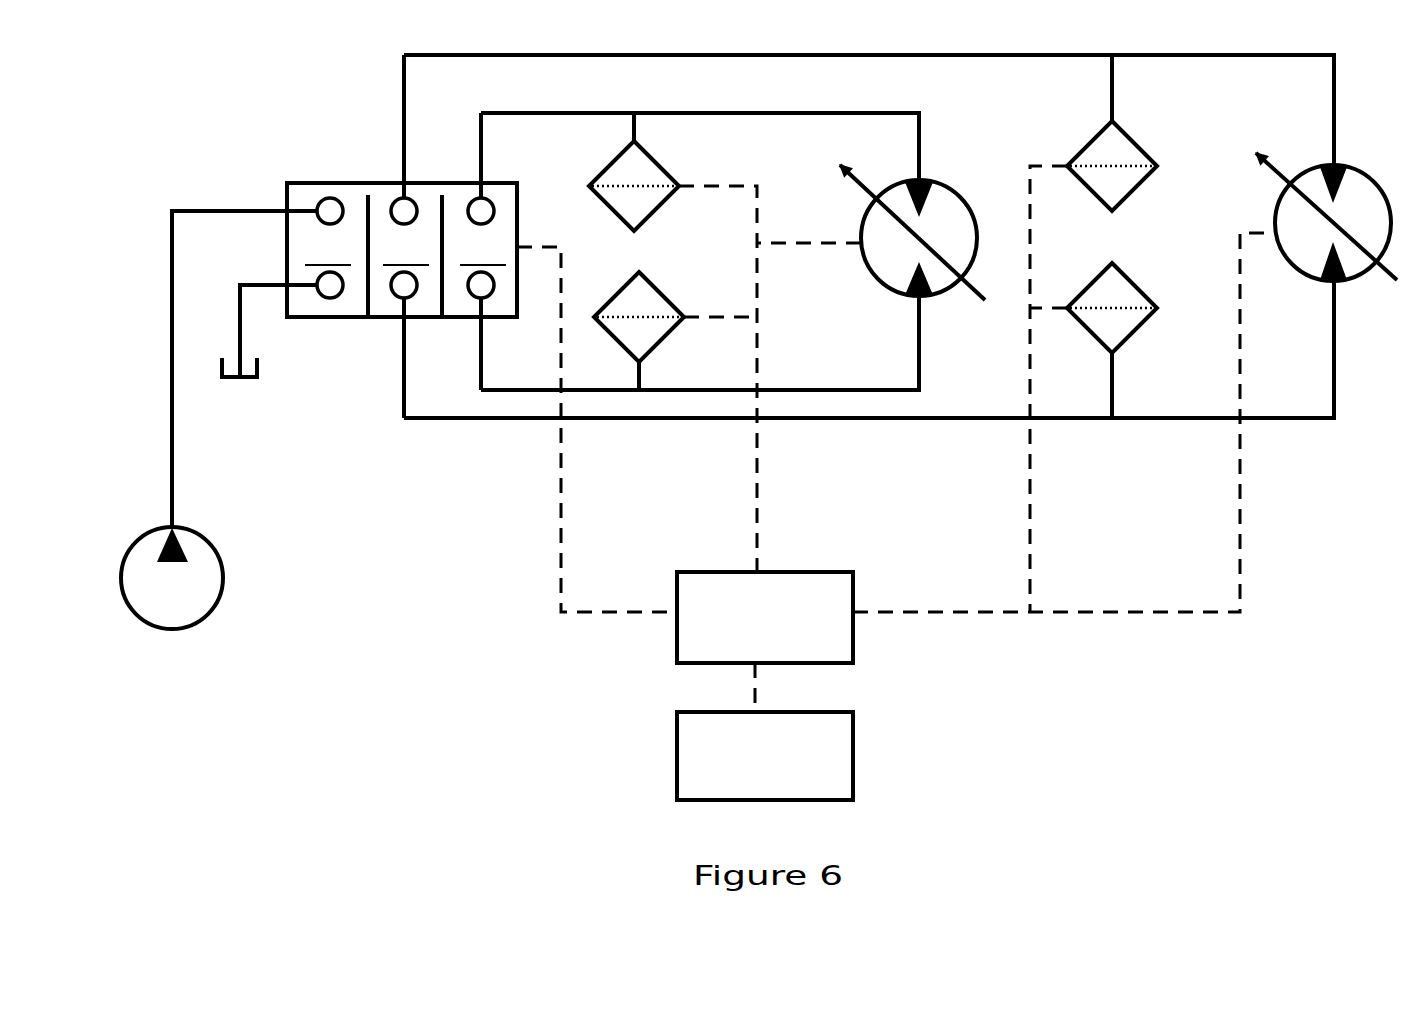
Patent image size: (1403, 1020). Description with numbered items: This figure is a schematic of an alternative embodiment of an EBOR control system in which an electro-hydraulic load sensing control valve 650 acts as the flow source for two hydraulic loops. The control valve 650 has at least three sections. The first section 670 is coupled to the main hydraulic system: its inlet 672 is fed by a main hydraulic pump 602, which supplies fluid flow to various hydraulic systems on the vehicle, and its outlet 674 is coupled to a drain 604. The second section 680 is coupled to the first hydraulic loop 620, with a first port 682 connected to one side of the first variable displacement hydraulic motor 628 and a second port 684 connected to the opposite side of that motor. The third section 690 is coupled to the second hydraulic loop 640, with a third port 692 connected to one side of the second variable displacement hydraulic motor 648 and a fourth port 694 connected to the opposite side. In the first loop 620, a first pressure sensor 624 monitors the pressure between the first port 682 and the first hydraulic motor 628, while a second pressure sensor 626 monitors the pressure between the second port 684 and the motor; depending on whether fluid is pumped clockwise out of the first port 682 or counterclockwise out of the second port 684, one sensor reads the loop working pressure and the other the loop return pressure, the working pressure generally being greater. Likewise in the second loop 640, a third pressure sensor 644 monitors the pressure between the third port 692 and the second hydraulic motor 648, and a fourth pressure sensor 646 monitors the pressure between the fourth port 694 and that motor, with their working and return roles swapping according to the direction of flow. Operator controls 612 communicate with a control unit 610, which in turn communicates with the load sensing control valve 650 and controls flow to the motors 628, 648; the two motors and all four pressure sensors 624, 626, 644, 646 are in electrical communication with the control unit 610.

The main hydraulic pump 602 is at (218, 557).
The drain 604 is at (245, 377).
The control unit 610 is at (840, 572).
The operator controls 612 is at (857, 740).
The first hydraulic loop 620 is at (900, 236).
The first pressure sensor 624 is at (1138, 145).
The second pressure sensor 626 is at (1138, 290).
The first variable displacement hydraulic motor 628 is at (1275, 215).
The second hydraulic loop 640 is at (745, 241).
The third pressure sensor 644 is at (663, 167).
The fourth pressure sensor 646 is at (667, 298).
The second variable displacement hydraulic motor 648 is at (860, 230).
The electro-hydraulic load sensing control valve 650 is at (353, 249).
The first section 670 is at (328, 252).
The inlet 672 is at (323, 202).
The outlet 674 is at (323, 297).
The second section 680 is at (406, 252).
The first port 682 is at (393, 202).
The second port 684 is at (400, 297).
The third section 690 is at (483, 252).
The third port 692 is at (468, 202).
The fourth port 694 is at (477, 297).